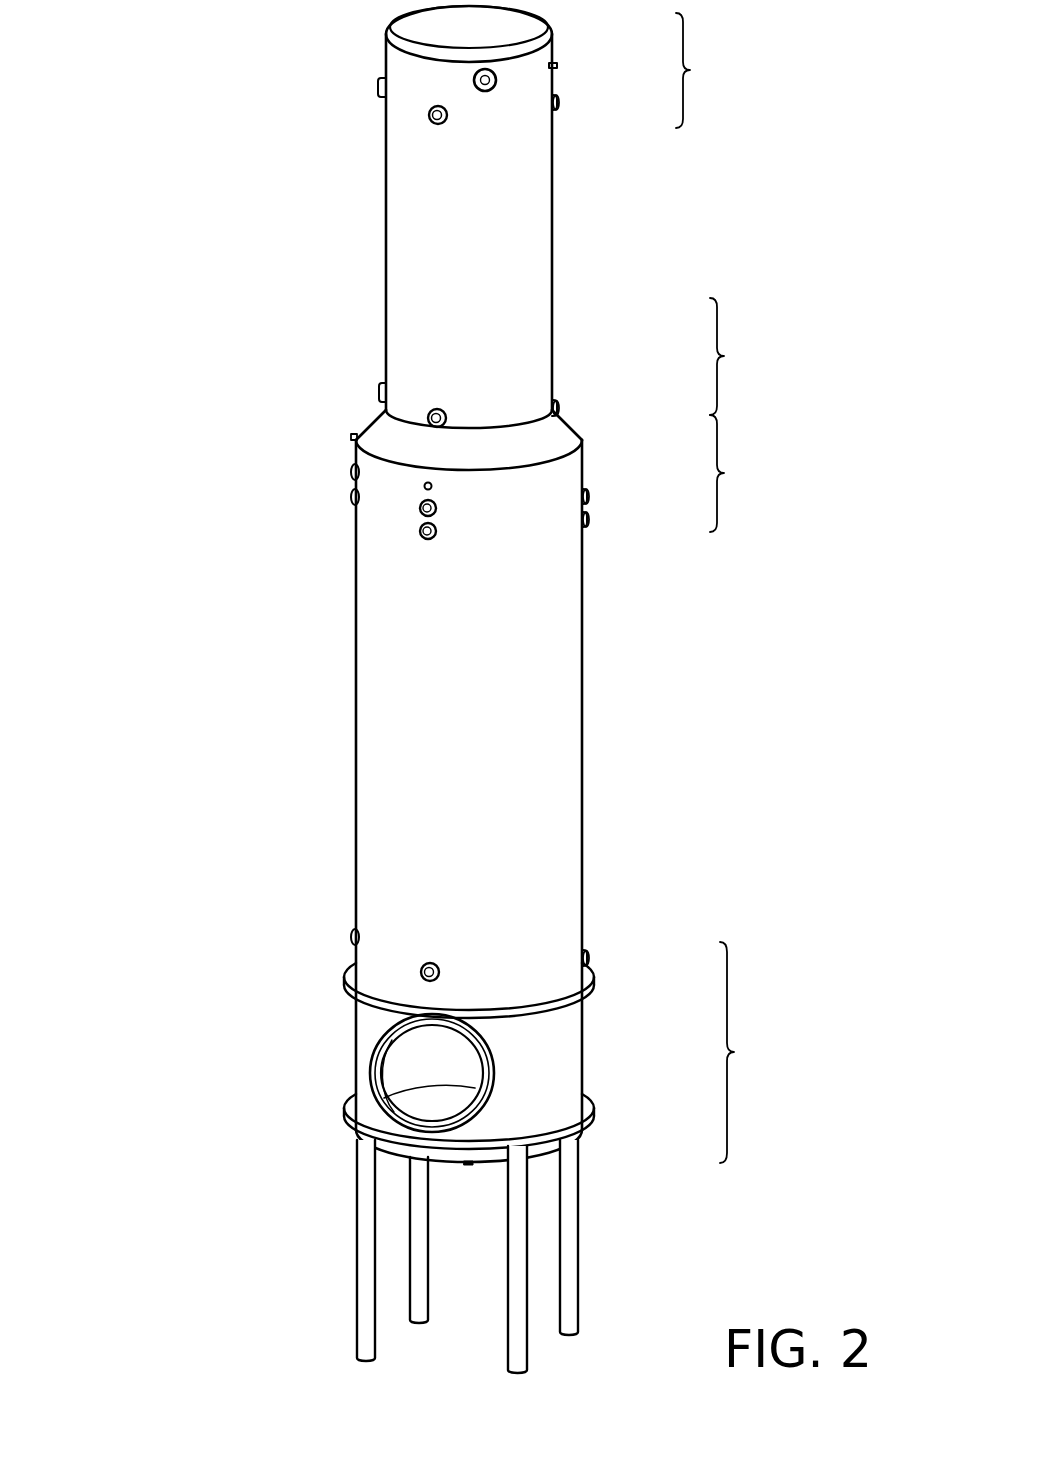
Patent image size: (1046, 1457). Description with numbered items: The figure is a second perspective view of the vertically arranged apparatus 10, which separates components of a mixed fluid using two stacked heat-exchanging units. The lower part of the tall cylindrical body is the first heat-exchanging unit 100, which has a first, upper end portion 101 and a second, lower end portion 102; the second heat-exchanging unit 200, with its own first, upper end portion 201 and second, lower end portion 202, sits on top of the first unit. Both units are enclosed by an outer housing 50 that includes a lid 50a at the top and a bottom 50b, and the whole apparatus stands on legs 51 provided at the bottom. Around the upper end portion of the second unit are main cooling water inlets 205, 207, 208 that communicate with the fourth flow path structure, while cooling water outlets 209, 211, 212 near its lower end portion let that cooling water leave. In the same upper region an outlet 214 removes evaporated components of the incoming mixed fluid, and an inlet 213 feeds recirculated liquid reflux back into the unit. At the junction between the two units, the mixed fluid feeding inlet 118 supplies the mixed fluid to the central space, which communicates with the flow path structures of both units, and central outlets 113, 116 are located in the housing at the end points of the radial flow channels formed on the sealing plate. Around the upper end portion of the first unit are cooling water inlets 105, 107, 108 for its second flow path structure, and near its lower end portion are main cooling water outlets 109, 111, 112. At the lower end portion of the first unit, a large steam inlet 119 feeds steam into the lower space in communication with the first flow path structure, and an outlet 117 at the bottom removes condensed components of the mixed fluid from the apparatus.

The apparatus 10 is at (167, 207).
The outer housing 50 is at (356, 697).
The lid 50a is at (450, 32).
The bottom 50b is at (417, 1147).
The legs 51 is at (580, 1232).
The first heat-exchanging unit 100 is at (437, 777).
The first, upper end portion 101 is at (744, 473).
The second, lower end portion 102 is at (757, 1052).
The cooling water inlet 105 is at (351, 497).
The cooling water inlet 107 is at (590, 519).
The cooling water inlet 108 is at (426, 535).
The main cooling water outlet 109 is at (351, 937).
The main cooling water outlet 111 is at (590, 958).
The main cooling water outlet 112 is at (428, 975).
The central outlet 113 is at (351, 472).
The central outlet 116 is at (426, 512).
The outlet for condensed components 117 is at (470, 1163).
The mixed fluid feeding inlet 118 is at (351, 437).
The steam inlet 119 is at (430, 1070).
The second heat-exchanging unit 200 is at (437, 245).
The first, upper end portion 201 is at (710, 70).
The second, lower end portion 202 is at (744, 356).
The main cooling water inlet 205 is at (380, 87).
The main cooling water inlet 207 is at (560, 103).
The main cooling water inlet 208 is at (430, 116).
The cooling water outlet 209 is at (381, 392).
The cooling water outlet 211 is at (560, 408).
The cooling water outlet 212 is at (437, 424).
The inlet for recirculated components (reflux) 213 is at (560, 66).
The outlet for evaporated components 214 is at (487, 89).